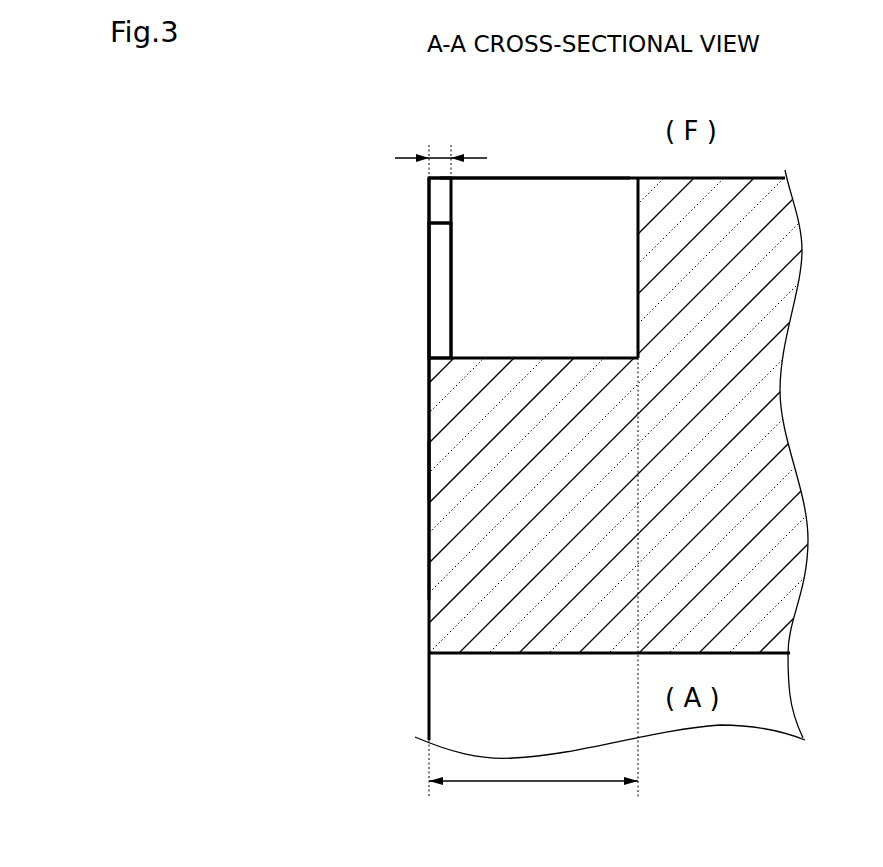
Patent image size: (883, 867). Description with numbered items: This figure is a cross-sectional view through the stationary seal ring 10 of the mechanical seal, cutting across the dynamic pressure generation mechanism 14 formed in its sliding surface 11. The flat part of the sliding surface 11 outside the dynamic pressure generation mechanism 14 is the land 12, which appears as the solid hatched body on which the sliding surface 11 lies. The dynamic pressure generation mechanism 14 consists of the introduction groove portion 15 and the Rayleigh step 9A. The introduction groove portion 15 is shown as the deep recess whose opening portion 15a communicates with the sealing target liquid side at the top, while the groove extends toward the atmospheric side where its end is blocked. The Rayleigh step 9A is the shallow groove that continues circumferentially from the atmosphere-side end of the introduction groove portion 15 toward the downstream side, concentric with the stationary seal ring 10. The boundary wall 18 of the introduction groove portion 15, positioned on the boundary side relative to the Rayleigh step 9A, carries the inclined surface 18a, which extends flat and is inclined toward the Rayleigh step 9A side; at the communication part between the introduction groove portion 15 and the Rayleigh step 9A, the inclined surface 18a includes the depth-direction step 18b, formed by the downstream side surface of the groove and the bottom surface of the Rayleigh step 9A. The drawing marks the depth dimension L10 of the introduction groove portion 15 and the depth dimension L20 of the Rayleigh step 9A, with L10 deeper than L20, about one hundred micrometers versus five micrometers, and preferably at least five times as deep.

The stationary seal ring 10 is at (414, 580).
The sliding surface 11 is at (429, 514).
The land 12 is at (429, 472).
The dynamic pressure generation mechanism 14 is at (415, 341).
The introduction groove portion 15 is at (611, 274).
The opening portion 15a is at (545, 178).
The boundary wall 18 is at (370, 268).
The inclined surface 18a is at (493, 219).
The depth-direction step 18b is at (440, 288).
The Rayleigh step 9A is at (440, 322).
The depth dimension of the introduction groove portion L10 is at (533, 589).
The depth dimension of the Rayleigh step L20 is at (441, 168).